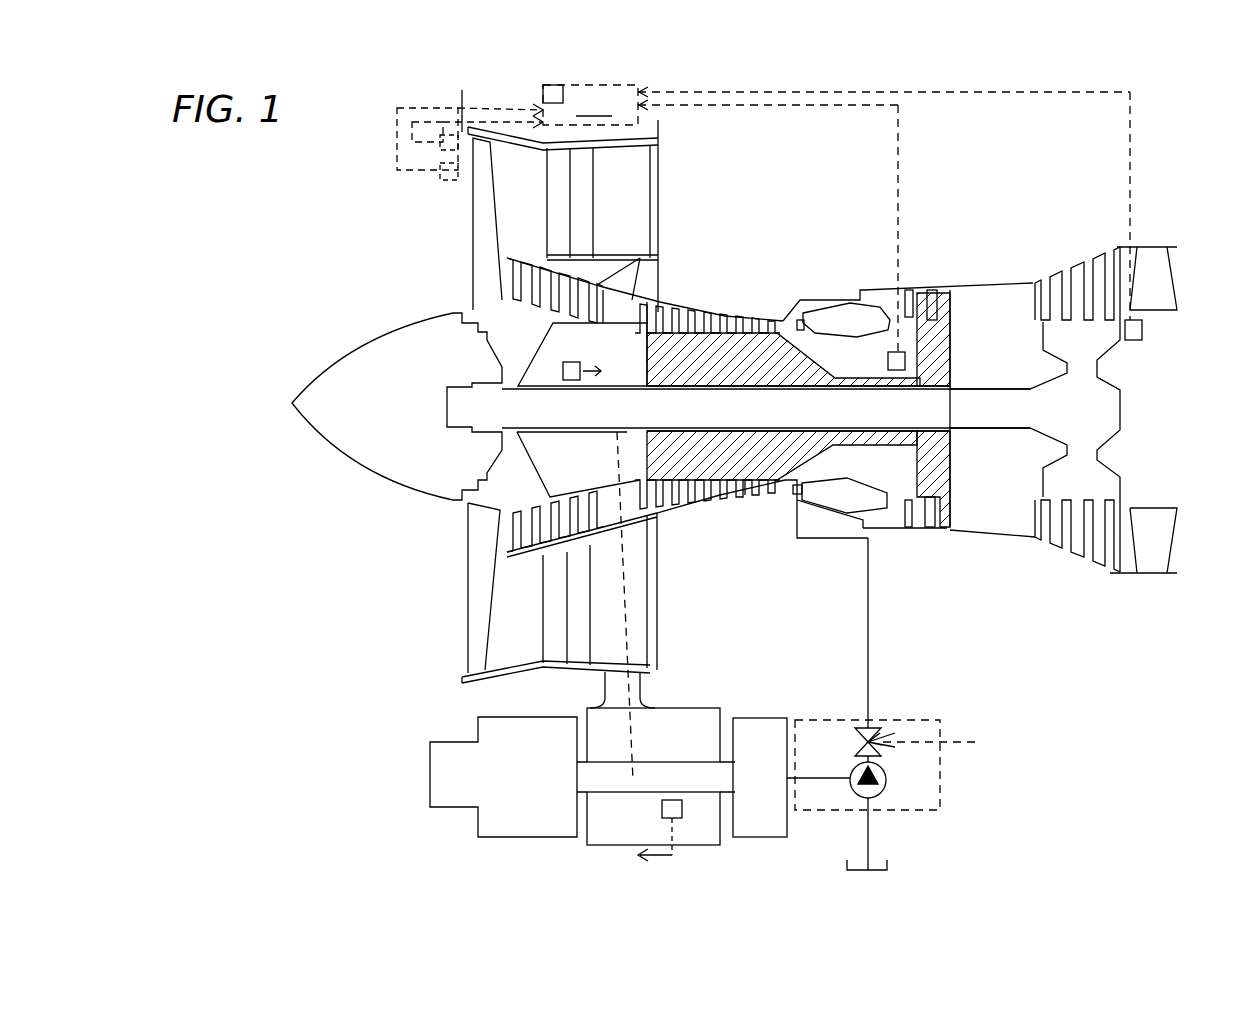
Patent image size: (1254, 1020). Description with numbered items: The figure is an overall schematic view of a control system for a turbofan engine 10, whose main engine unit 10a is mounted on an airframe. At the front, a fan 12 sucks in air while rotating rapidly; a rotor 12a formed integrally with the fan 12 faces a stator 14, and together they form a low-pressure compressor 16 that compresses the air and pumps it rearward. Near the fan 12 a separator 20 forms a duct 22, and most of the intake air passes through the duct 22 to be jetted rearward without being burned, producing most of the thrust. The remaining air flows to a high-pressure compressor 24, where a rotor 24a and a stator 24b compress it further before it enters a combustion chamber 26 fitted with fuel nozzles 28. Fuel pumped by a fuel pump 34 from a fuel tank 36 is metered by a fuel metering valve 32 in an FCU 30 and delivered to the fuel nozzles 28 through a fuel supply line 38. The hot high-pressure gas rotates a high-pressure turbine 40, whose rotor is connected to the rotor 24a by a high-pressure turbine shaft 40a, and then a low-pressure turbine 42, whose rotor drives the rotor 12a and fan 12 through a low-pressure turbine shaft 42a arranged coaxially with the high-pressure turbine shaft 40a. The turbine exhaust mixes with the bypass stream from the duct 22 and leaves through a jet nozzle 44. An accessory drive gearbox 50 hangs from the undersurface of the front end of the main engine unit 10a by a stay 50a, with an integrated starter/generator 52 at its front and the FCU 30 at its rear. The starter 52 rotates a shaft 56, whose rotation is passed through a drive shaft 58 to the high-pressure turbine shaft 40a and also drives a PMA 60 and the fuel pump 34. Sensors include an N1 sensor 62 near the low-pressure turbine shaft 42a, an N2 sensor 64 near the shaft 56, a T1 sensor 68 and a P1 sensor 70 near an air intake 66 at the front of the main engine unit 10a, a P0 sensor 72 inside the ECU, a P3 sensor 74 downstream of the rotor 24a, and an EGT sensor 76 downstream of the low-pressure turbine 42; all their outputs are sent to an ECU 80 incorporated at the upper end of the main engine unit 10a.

The turbofan engine 10 is at (711, 213).
The main engine unit 10a is at (679, 584).
The fan 12 is at (467, 563).
The rotor 12a is at (553, 496).
The stator 14 is at (510, 553).
The low-pressure compressor 16 is at (576, 328).
The separator 20 is at (652, 262).
The duct 22 is at (639, 207).
The high-pressure compressor 24 is at (762, 505).
The rotor 24a is at (777, 345).
The stator 24b is at (720, 503).
The combustion chamber 26 is at (845, 315).
The fuel nozzles 28 is at (797, 325).
The FCU 30 is at (798, 720).
The fuel metering valve 32 is at (876, 730).
The fuel pump 34 is at (855, 770).
The fuel tank 36 is at (847, 868).
The fuel supply line 38 is at (868, 624).
The high-pressure turbine 40 is at (930, 340).
The high-pressure turbine shaft 40a is at (612, 434).
The low-pressure turbine 42 is at (1043, 340).
The low-pressure turbine shaft 42a is at (758, 419).
The jet nozzle 44 is at (1162, 365).
The accessory drive gearbox 50 is at (660, 708).
The stay 50a is at (600, 688).
The integrated starter/generator 52 is at (532, 789).
The shaft 56 is at (608, 792).
The drive shaft 58 is at (634, 740).
The PMA 60 is at (777, 789).
The N1 sensor 62 is at (563, 371).
The N2 sensor 64 is at (682, 810).
The air intake 66 is at (465, 99).
The T1 sensor 68 is at (440, 122).
The P1 sensor 70 is at (450, 180).
The P0 sensor 72 is at (543, 94).
The P3 sensor 74 is at (888, 362).
The EGT sensor 76 is at (1142, 330).
The ECU 80 is at (638, 118).